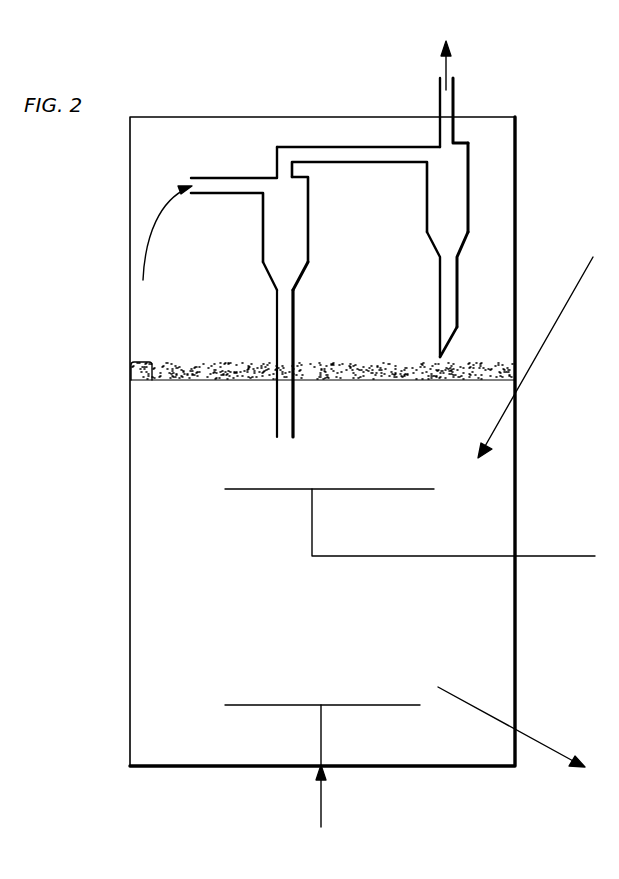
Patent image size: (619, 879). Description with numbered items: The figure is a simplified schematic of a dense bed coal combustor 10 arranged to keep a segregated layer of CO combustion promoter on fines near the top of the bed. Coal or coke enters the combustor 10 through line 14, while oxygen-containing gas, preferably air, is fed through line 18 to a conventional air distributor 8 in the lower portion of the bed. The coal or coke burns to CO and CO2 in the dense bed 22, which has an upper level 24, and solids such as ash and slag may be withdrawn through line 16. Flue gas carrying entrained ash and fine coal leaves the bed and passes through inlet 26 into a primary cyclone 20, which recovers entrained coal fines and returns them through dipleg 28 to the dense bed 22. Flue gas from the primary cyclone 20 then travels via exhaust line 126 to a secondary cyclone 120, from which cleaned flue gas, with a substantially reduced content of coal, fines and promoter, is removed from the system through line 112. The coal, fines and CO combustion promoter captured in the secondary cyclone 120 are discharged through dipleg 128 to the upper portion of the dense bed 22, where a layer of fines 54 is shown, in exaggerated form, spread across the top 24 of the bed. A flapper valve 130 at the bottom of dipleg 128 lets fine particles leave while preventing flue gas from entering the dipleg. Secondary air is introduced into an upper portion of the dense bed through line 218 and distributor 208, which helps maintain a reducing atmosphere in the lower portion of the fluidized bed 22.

The combustor 10 is at (130, 531).
The dense bed 22 is at (140, 638).
The inlet 26 is at (226, 178).
The exhaust line 126 is at (368, 147).
The line 112 is at (455, 105).
The cyclone 20 is at (310, 207).
The secondary cyclone 120 is at (470, 195).
The dipleg 128 is at (458, 286).
The flapper valve 130 is at (438, 358).
The dipleg 28 is at (295, 342).
The layer of fines 54 is at (168, 362).
The upper level 24 is at (150, 362).
The line 14 is at (533, 362).
The distributor 208 is at (347, 489).
The line 218 is at (548, 556).
The air distributor 8 is at (400, 705).
The line 18 is at (324, 795).
The line 16 is at (547, 748).